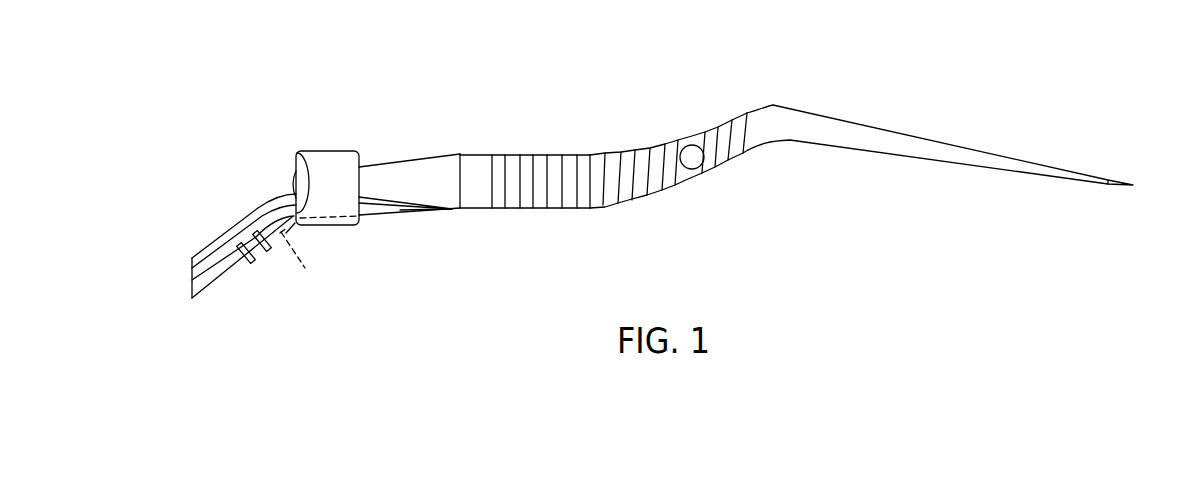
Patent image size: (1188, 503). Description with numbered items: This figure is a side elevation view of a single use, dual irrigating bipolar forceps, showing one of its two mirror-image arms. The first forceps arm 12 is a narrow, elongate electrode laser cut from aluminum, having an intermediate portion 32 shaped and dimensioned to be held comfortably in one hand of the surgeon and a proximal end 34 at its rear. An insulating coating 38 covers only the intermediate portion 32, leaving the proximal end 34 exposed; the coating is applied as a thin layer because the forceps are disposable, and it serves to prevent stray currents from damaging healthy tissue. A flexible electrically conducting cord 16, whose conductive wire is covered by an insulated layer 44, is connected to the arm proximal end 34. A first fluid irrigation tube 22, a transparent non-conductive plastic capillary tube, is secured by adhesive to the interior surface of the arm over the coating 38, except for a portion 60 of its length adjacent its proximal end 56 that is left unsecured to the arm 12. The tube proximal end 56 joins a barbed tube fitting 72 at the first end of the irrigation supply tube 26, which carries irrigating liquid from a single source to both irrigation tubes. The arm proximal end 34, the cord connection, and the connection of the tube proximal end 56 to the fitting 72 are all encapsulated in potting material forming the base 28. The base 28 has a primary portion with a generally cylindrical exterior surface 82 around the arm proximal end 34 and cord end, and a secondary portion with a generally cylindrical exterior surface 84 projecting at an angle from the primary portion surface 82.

The first forceps arm 12 is at (786, 103).
The first electrically conducting cord 16 is at (242, 207).
The first fluid irrigation tube 22 is at (432, 216).
The irrigation supply tube 26 is at (210, 293).
The base 28 is at (334, 146).
The intermediate portion 32 is at (654, 160).
The proximal end 34 is at (362, 170).
The insulating coating 38 is at (555, 165).
The insulated layer 44 is at (210, 250).
The tube proximal end 56 is at (308, 268).
The unsecured portion of the tube length 60 is at (372, 216).
The barbed tube fitting 72 is at (256, 263).
The primary portion exterior surface 82 is at (308, 172).
The secondary portion exterior surface 84 is at (298, 234).